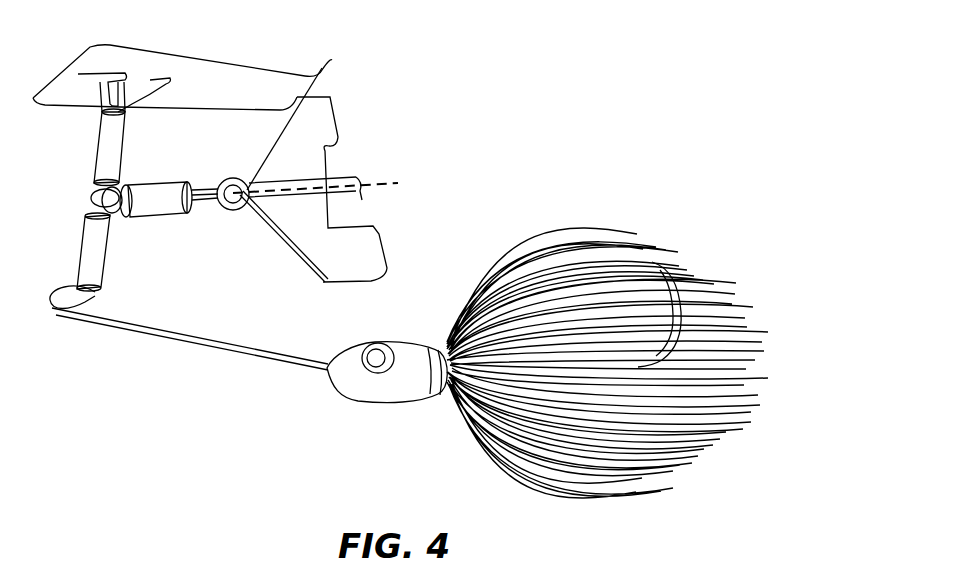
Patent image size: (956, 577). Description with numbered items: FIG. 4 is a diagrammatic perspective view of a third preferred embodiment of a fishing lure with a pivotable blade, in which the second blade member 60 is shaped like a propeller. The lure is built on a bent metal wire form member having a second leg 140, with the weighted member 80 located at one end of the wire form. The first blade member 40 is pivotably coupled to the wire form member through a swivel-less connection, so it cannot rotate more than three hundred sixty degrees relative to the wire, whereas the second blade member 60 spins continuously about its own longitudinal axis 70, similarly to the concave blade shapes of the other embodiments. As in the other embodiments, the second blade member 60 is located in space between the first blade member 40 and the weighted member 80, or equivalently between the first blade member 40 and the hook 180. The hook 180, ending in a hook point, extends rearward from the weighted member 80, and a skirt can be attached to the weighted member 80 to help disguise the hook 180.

The first blade member 40 is at (222, 77).
The second blade member 60 is at (357, 250).
The longitudinal axis 70 is at (375, 186).
The weighted member 80 is at (393, 380).
The second leg 140 is at (44, 318).
The hook 180 is at (668, 298).